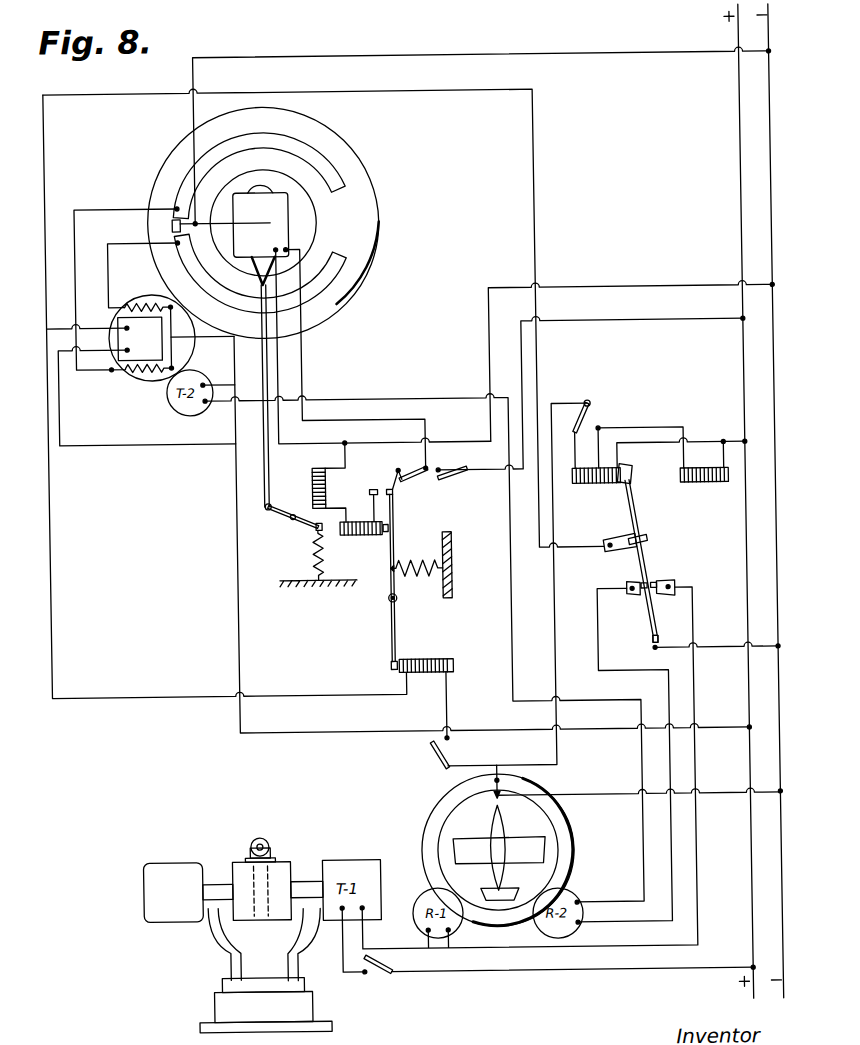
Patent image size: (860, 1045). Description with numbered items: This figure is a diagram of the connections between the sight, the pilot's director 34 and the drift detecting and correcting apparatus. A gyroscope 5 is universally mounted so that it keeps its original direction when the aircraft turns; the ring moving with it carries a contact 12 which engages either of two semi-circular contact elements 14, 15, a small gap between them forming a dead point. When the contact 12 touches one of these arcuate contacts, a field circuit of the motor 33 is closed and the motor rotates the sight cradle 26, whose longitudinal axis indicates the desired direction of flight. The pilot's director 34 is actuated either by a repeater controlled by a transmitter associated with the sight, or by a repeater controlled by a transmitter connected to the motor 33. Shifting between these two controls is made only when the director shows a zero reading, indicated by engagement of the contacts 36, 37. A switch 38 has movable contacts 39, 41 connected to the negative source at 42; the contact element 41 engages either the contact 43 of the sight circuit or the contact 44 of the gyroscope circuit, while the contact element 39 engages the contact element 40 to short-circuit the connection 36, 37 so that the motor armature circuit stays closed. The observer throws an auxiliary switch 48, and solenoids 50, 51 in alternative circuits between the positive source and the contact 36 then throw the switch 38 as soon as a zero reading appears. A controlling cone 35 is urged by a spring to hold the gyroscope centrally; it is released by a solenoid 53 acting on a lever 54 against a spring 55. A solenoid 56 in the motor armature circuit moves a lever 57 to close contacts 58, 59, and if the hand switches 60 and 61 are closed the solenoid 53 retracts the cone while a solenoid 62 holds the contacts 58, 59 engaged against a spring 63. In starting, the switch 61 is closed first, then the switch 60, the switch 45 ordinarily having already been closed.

The gyroscope 5 is at (280, 213).
The contact 12 is at (180, 219).
The semi-circular contact element 14 is at (192, 264).
The semi-circular contact element 15 is at (192, 174).
The sight cradle 26 is at (351, 142).
The motor 33 is at (171, 345).
The pilot's director 34 is at (453, 832).
The controlling cone 35 is at (277, 276).
The contact 36 is at (491, 781).
The contact 37 is at (496, 794).
The switch 38 is at (627, 504).
The movable contact 39 is at (647, 540).
The contact element 40 is at (620, 549).
The contact element 41 is at (646, 585).
The negative source connection 42 is at (656, 638).
The contact 43 is at (674, 583).
The contact 44 is at (625, 601).
The switch 45 is at (428, 752).
The auxiliary switch 48 is at (592, 406).
The solenoid 50 is at (601, 470).
The solenoid 51 is at (704, 471).
The solenoid 53 is at (314, 486).
The lever 54 is at (290, 518).
The spring 55 is at (316, 547).
The solenoid 56 is at (438, 652).
The lever 57 is at (388, 636).
The contact 58 is at (374, 488).
The contact 59 is at (390, 489).
The hand switch 60 is at (416, 477).
The hand switch 61 is at (449, 474).
The solenoid 62 is at (368, 533).
The spring 63 is at (426, 558).